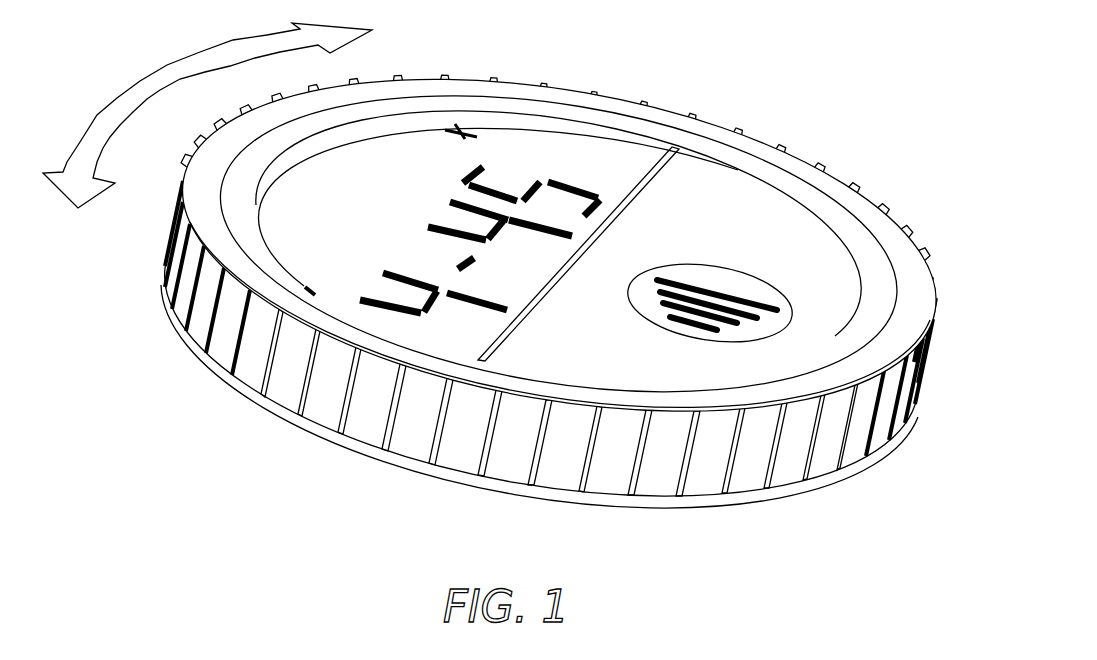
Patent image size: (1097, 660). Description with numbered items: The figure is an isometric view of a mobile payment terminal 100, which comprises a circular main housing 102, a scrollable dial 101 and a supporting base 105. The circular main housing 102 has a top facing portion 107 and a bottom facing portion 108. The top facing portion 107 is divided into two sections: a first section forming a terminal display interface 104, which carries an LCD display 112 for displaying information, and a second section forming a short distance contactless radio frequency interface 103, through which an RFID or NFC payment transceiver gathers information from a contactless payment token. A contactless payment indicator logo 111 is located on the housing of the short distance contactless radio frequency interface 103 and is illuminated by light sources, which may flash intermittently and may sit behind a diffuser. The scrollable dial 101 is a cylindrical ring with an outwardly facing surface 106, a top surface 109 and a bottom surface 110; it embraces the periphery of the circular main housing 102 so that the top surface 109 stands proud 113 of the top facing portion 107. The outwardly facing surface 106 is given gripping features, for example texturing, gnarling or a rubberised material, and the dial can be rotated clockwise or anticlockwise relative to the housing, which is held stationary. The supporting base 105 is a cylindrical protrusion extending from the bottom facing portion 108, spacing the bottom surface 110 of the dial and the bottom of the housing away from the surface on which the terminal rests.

The mobile payment terminal 100 is at (198, 401).
The scrollable dial 101 is at (860, 210).
The circular main housing 102 is at (720, 178).
The short distance contactless radio frequency interface 103 is at (863, 263).
The terminal display interface 104 is at (428, 228).
The supporting base 105 is at (740, 503).
The outwardly facing surface 106 is at (827, 463).
The top facing portion 107 is at (563, 373).
The bottom facing portion 108 is at (607, 493).
The top surface 109 is at (623, 398).
The bottom surface 110 is at (186, 320).
The contactless payment indicator logo 111 is at (768, 295).
The LCD display 112 is at (362, 300).
The standing proud 113 is at (465, 105).